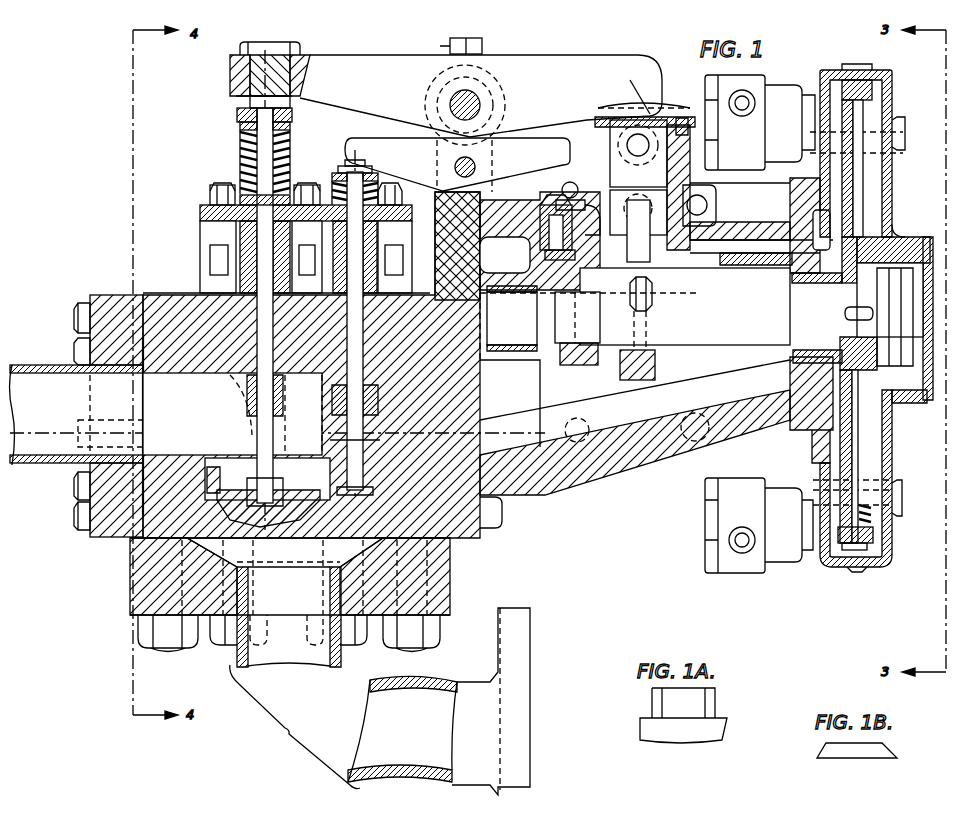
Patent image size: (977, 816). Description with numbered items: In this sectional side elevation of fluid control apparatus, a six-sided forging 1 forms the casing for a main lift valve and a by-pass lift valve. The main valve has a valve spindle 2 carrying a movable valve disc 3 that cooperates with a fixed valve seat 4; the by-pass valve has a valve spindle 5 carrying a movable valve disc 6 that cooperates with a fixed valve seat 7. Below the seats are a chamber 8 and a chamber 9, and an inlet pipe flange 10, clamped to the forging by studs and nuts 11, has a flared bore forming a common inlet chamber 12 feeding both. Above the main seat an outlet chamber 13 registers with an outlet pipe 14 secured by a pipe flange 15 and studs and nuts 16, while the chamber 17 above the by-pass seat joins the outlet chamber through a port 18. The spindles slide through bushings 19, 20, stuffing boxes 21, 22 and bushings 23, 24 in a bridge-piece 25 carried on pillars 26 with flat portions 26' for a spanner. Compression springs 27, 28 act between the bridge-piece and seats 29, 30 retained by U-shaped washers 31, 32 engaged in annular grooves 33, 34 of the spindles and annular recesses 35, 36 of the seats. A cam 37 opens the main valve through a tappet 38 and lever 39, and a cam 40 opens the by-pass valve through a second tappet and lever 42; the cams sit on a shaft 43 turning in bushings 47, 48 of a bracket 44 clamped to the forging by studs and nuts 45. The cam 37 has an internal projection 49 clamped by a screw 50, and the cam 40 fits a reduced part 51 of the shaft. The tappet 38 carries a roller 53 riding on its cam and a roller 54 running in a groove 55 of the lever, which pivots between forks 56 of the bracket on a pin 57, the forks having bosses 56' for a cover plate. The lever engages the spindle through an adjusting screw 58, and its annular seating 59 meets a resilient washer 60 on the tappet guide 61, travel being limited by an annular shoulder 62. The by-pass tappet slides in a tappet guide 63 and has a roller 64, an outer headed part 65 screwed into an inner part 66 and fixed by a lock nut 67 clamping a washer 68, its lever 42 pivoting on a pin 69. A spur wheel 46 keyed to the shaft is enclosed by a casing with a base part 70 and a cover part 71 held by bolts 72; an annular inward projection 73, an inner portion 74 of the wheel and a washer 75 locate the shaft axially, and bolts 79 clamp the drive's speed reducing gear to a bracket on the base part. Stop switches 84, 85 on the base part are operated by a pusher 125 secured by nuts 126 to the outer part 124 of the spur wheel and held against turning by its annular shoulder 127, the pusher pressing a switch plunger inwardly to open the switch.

In FIG. 1, the six-sided forging 1 is at (130, 298).
In FIG. 1, the valve spindle 2 is at (262, 400).
In FIG. 1, the movable valve disc 3 is at (270, 492).
In FIG. 1, the fixed valve seat 4 is at (222, 480).
In FIG. 1, the valve spindle 5 is at (335, 400).
In FIG. 1, the movable valve disc 6 is at (445, 560).
In FIG. 1, the fixed valve seat 7 is at (440, 545).
In FIG. 1, the chamber 8 is at (175, 545).
In FIG. 1, the chamber 9 is at (445, 578).
In FIG. 1, the inlet pipe flange 10 is at (450, 615).
In FIG. 1, the studs and nuts 11 is at (415, 632).
In FIG. 1, the common inlet chamber 12 is at (450, 590).
In FIG. 1, the outlet chamber 13 is at (112, 528).
In FIG. 1, the outlet pipe 14 is at (60, 456).
In FIG. 1, the pipe flange 15 is at (135, 540).
In FIG. 1, the studs and nuts 16 is at (74, 480).
In FIG. 1, the chamber 17 is at (335, 420).
In FIG. 1, the port 18 is at (332, 442).
In FIG. 1, the bushing 19 is at (250, 372).
In FIG. 1, the bushing 20 is at (325, 380).
In FIG. 1, the stuffing box 21 is at (190, 296).
In FIG. 1, the stuffing box 22 is at (445, 285).
In FIG. 1, the bushing 23 is at (240, 192).
In FIG. 1, the bushing 24 is at (318, 183).
In FIG. 1, the bridge-piece 25 is at (202, 213).
In FIG. 1, the pillars 26 is at (290, 257).
In FIG. 1, the flat portions 26' is at (301, 260).
In FIG. 1, the compression spring 27 is at (242, 158).
In FIG. 1, the compression spring 28 is at (334, 186).
In FIG. 1, the seat 29 is at (240, 127).
In FIG. 1, the seat 30 is at (337, 174).
In FIG. 1, the U-shaped washer 31 is at (240, 115).
In FIG. 1, the U-shaped washer 32 is at (342, 167).
In FIG. 1, the annular groove 33 is at (250, 104).
In FIG. 1, the annular groove 34 is at (350, 160).
In FIG. 1, the annular recess 35 is at (318, 118).
In FIG. 1, the annular recess 36 is at (457, 165).
In FIG. 1, the cam 37 is at (655, 372).
In FIG. 1, the tappet 38 is at (722, 170).
In FIG. 1, the lever 39 is at (570, 72).
In FIG. 1, the cam 40 is at (575, 365).
In FIG. 1, the lever 42 is at (550, 143).
In FIG. 1, the shaft 43 is at (670, 290).
In FIG. 1, the bracket 44 is at (540, 472).
In FIG. 1, the studs and nuts 45 is at (502, 512).
In FIG. 1, the spur wheel 46 is at (848, 222).
In FIG. 1, the bushing 47 is at (815, 285).
In FIG. 1, the bushing 48 is at (525, 350).
In FIG. 1, the internal projection 49 is at (630, 352).
In FIG. 1, the screw 50 is at (652, 294).
In FIG. 1, the part of the shaft of reduced diameter 51 is at (575, 330).
In FIG. 1, the roller 53 is at (650, 248).
In FIG. 1, the roller 54 is at (645, 108).
In FIG. 1, the groove 55 is at (640, 112).
In FIG. 1, the forks 56 is at (491, 142).
In FIG. 1, the bosses 56' is at (448, 45).
In FIG. 1, the pin 57 is at (468, 103).
In FIG. 1, the adjusting screw 58 is at (285, 58).
In FIG. 1, the annular seating 59 is at (680, 115).
In FIG. 1, the resilient washer 60 is at (686, 135).
In FIG. 1, the tappet guide 61 is at (716, 203).
In FIG. 1, the annular shoulder 62 is at (608, 196).
In FIG. 1, the tappet guide 63 is at (545, 212).
In FIG. 1, the roller 64 is at (567, 250).
In FIG. 1, the outer headed part 65 is at (575, 186).
In FIG. 1, the inner part 66 is at (582, 255).
In FIG. 1, the lock nut 67 is at (540, 185).
In FIG. 1, the washer 68 is at (556, 200).
In FIG. 1, the pin 69 is at (438, 200).
In FIG. 1, the base part 70 is at (830, 185).
In FIG. 1, the cover part 71 is at (892, 190).
In FIG. 1, the bolts 72 is at (902, 497).
In FIG. 1, the annular inward projection 73 is at (933, 268).
In FIG. 1, the inner portion 74 is at (848, 255).
In FIG. 1, the washer 75 is at (930, 250).
In FIG. 1, the bolts 79 is at (720, 213).
In FIG. 1, the stop switch 84 is at (787, 138).
In FIG. 1, the stop switch 85 is at (758, 565).
In FIG. 1, the outer part 124 is at (870, 535).
In FIG. 1, the cam or pusher 125 is at (862, 570).
In FIG. 1A, the cam or pusher 125 is at (712, 697).
In FIG. 1B, the cam or pusher 125 is at (857, 755).
In FIG. 1, the nuts 126 is at (878, 520).
In FIG. 1, the annular shoulder 127 is at (858, 452).
In FIG. 1A, the annular shoulder 127 is at (648, 718).